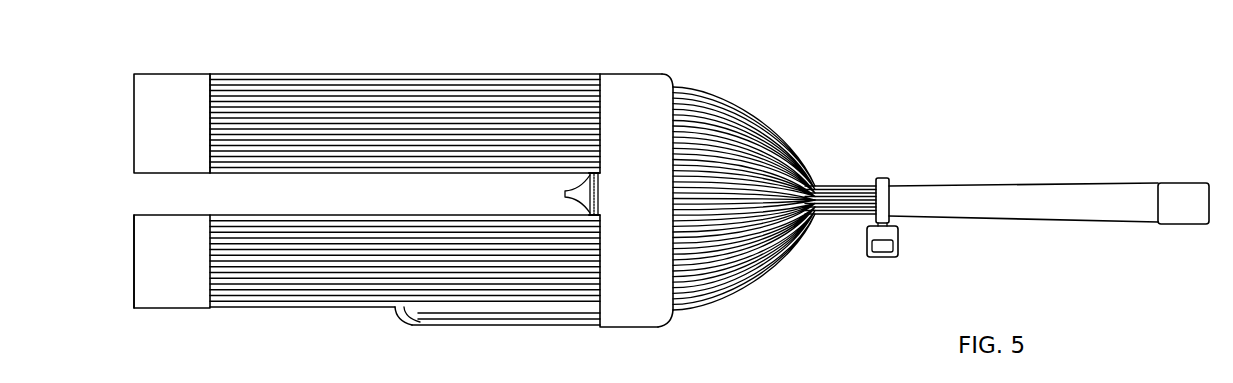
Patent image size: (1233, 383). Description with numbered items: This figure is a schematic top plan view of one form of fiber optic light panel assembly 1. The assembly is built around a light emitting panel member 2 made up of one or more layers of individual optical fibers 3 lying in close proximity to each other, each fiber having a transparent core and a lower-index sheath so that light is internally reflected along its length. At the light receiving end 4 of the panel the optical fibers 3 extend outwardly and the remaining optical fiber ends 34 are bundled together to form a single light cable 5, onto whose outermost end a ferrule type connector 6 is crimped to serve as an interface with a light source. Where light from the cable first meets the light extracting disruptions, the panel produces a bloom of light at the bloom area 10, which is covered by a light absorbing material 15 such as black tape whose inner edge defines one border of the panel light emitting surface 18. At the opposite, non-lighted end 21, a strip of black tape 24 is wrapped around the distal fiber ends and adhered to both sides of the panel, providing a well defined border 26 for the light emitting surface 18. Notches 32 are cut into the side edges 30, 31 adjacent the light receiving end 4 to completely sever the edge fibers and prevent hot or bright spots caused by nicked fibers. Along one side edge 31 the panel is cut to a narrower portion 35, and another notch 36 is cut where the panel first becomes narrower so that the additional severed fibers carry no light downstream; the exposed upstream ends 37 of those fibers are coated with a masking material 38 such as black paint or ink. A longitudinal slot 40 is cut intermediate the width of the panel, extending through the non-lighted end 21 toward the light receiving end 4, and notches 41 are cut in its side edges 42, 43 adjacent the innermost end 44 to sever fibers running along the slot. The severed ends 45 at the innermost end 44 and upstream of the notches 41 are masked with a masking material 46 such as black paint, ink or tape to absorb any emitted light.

The fiber optic light panel assembly 1 is at (407, 52).
The light emitting panel member 2 is at (436, 116).
The optical fibers 3 is at (522, 73).
The light receiving end 4 is at (774, 193).
The light cable 5 is at (822, 190).
The ferrule type connector 6 is at (1180, 192).
The bloom area 10 is at (638, 64).
The light absorbing material 15 is at (628, 307).
The panel light emitting surface 18 is at (405, 280).
The non-lighted end 21 is at (150, 298).
The strip of black tape 24 is at (182, 78).
The border 26 is at (212, 90).
The side edge 30 is at (453, 73).
The side edge 31 is at (533, 327).
The notches 32 is at (670, 84).
The remaining optical fiber ends 34 is at (733, 291).
The narrower portion 35 is at (273, 309).
The notch 36 is at (393, 312).
The exposed upstream ends 37 is at (428, 316).
The masking material 38 is at (409, 323).
The longitudinal slot 40 is at (246, 194).
The notches 41 is at (594, 194).
The slot side edge 42 is at (406, 174).
The slot side edge 43 is at (392, 214).
The innermost end 44 is at (627, 194).
The severed ends 45 is at (597, 208).
The masking material 46 is at (598, 176).